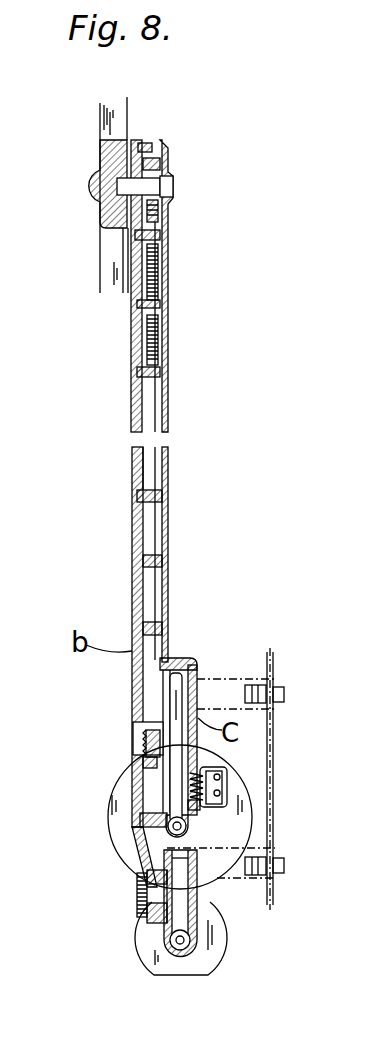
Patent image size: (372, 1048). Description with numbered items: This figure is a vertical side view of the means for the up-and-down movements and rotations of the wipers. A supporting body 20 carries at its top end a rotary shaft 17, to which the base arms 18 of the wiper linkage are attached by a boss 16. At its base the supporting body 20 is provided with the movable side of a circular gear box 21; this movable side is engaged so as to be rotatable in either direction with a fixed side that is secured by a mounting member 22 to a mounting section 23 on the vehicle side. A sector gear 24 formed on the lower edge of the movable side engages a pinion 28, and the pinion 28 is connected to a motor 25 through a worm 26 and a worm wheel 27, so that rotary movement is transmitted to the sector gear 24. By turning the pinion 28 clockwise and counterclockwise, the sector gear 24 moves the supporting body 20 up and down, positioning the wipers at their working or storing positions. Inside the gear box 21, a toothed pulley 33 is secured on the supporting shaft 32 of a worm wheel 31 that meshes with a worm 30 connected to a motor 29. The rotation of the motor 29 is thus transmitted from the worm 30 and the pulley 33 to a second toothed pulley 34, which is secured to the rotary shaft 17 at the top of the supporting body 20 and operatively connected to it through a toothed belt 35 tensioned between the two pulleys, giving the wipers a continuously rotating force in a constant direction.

The boss 16 is at (98, 162).
The rotary shaft 17 is at (172, 187).
The base arm 18 is at (103, 108).
The supporting body 20 is at (168, 410).
The circular gear box 21 is at (181, 650).
The mounting member 22 is at (224, 670).
The mounting section 23 is at (272, 752).
The sector gear 24 is at (140, 868).
The motor 25 is at (173, 965).
The worm 26 is at (190, 935).
The worm wheel 27 is at (180, 925).
The pinion 28 is at (140, 910).
The motor 29 is at (108, 827).
The worm 30 is at (160, 840).
The worm wheel 31 is at (178, 785).
The supporting shaft 32 is at (135, 740).
The toothed pulley 33 is at (140, 745).
The second toothed pulley 34 is at (157, 207).
The toothed belt 35 is at (158, 280).